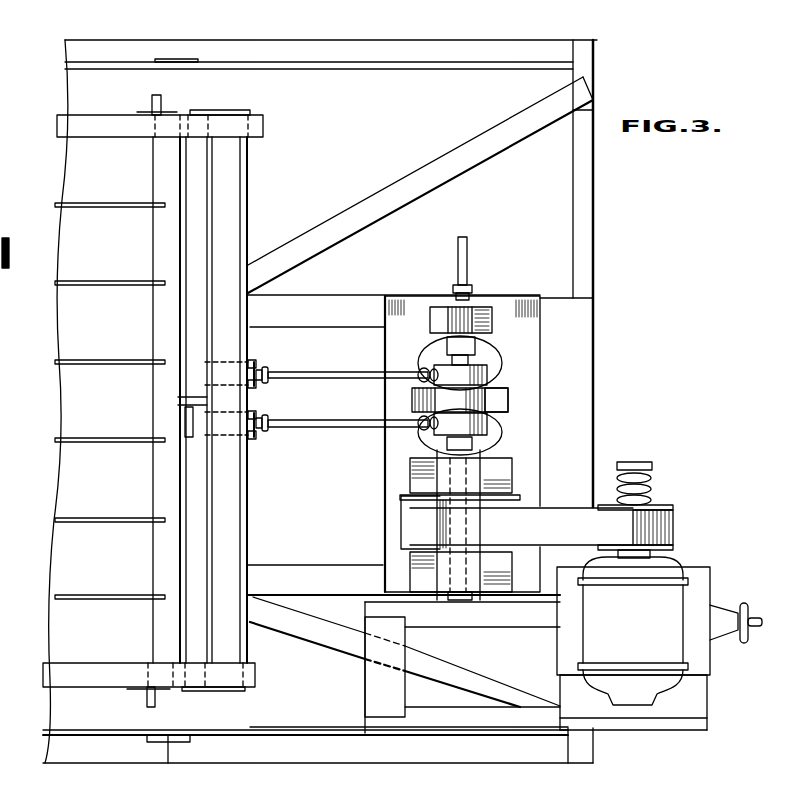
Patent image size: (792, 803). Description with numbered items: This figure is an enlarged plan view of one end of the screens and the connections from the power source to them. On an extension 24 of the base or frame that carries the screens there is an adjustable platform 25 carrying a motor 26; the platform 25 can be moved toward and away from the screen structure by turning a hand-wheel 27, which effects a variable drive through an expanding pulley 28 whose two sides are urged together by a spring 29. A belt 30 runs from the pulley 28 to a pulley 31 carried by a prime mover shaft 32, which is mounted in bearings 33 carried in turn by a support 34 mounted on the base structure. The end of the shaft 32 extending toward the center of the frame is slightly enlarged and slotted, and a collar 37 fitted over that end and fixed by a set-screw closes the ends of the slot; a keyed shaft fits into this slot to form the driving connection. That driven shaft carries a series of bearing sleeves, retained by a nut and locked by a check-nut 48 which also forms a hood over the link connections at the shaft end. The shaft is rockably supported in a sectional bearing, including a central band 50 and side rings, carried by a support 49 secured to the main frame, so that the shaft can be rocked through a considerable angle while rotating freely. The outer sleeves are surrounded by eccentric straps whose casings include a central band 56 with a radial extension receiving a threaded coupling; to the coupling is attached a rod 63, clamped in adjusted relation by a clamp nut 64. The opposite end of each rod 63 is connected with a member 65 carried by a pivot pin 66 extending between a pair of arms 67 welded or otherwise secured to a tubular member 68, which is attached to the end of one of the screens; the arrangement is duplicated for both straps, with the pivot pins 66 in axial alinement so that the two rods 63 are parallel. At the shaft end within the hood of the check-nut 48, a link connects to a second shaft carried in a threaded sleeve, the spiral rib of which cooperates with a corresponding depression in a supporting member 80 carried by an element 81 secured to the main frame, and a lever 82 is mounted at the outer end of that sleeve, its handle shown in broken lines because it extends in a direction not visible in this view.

The extension 24 is at (613, 722).
The adjustable platform 25 is at (700, 584).
The motor 26 is at (668, 651).
The hand-wheel 27 is at (746, 620).
The expanding pulley 28 is at (668, 507).
The spring 29 is at (651, 481).
The belt 30 is at (557, 515).
The pulley 31 is at (427, 500).
The prime mover shaft 32 is at (400, 497).
The bearings 33 is at (485, 490).
The support 34 is at (532, 389).
The collar 37 is at (447, 445).
The check-nut 48 is at (474, 346).
The support 49 is at (493, 401).
The central band 50 is at (412, 399).
The central band 56 is at (487, 376).
The rod 63 is at (353, 378).
The clamp nut 64 is at (420, 372).
The member 65 is at (262, 368).
The pivot pin 66 is at (262, 381).
The arms 67 is at (252, 360).
The tubular member 68 is at (225, 476).
The supporting member 80 is at (446, 323).
The element 81 is at (487, 321).
The lever 82 is at (470, 298).